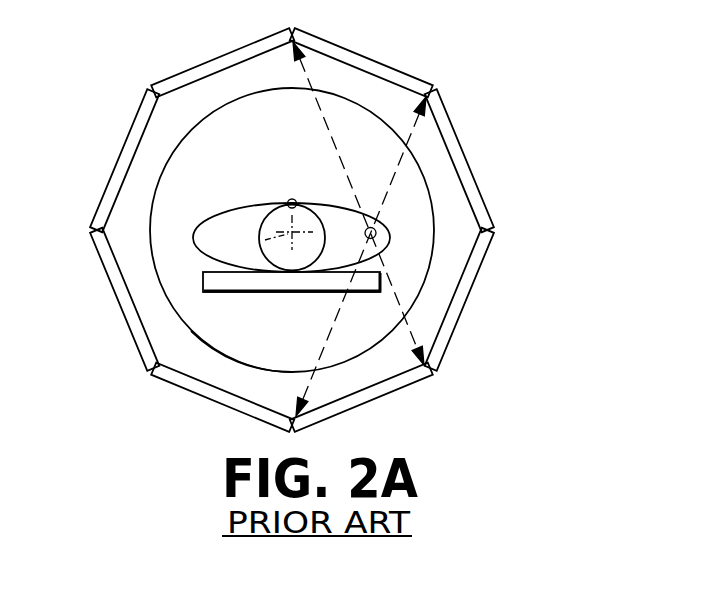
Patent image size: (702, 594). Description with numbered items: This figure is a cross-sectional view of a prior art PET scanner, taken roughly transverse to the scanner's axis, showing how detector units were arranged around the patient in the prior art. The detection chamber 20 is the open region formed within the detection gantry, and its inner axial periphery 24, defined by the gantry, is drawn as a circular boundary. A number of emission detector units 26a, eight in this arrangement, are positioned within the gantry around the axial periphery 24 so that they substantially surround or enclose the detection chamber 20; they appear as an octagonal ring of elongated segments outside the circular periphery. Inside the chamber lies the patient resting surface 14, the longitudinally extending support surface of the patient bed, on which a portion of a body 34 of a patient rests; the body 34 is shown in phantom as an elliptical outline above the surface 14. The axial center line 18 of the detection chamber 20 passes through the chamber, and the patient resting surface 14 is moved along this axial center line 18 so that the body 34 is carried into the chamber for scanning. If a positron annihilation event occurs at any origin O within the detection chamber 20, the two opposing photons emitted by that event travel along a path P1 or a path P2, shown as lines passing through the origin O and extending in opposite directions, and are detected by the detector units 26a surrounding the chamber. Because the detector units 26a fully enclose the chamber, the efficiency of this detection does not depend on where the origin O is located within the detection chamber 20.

The emission detector units 26a is at (382, 63).
The detection chamber 20 is at (250, 164).
The inner axial periphery 24 is at (192, 330).
The body 34 is at (240, 208).
The axial center line 18 is at (262, 241).
The patient resting surface 14 is at (268, 280).
The origin O is at (376, 231).
The path P1 is at (400, 307).
The path P2 is at (298, 332).